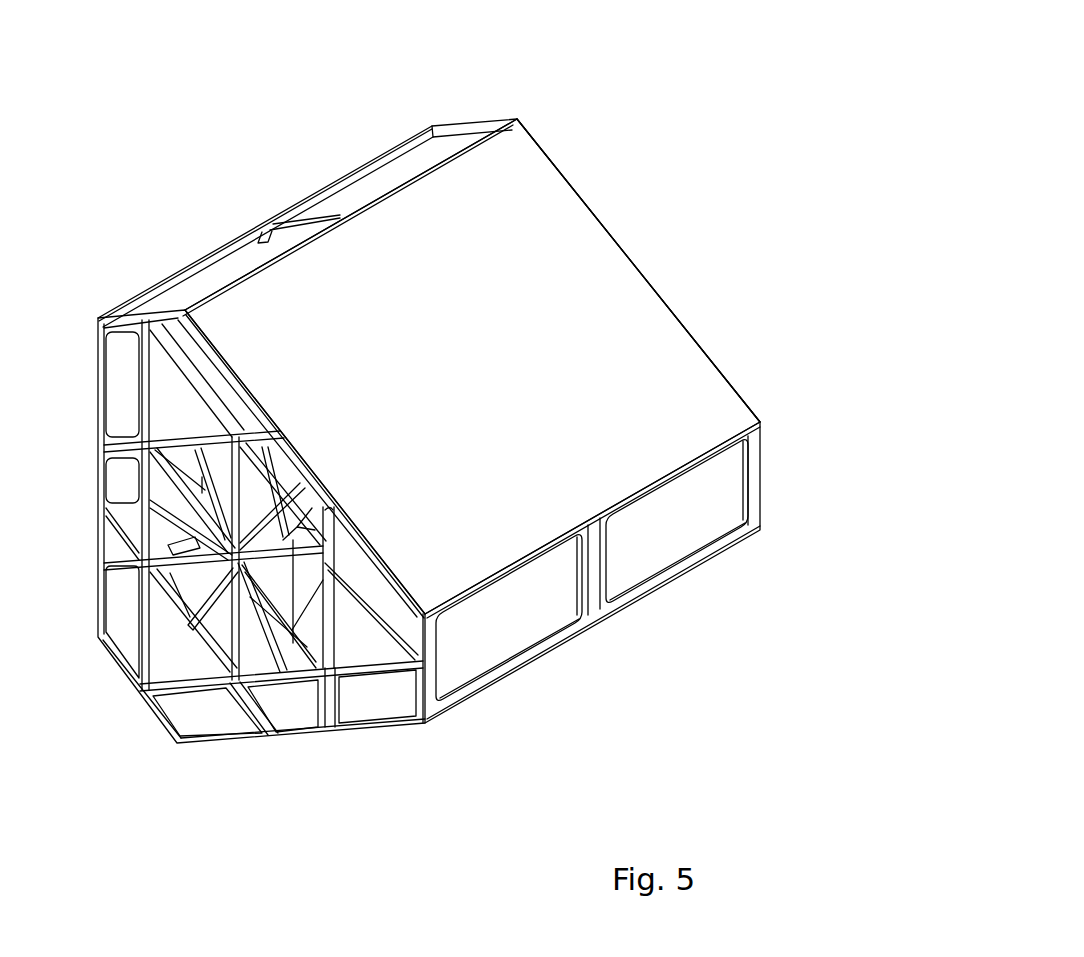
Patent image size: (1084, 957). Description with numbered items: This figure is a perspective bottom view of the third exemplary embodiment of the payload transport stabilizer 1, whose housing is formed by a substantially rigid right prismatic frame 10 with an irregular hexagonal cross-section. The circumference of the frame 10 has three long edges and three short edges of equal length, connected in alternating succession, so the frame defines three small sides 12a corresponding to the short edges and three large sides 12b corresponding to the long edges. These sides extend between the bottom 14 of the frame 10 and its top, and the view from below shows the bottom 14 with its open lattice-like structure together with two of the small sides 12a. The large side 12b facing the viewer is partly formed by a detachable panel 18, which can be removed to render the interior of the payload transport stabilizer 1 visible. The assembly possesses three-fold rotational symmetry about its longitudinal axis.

The payload transport stabilizer 1 is at (187, 190).
The frame 10 is at (332, 728).
The small sides 12a is at (378, 187).
The large sides 12b is at (625, 350).
The bottom 14 is at (142, 600).
The detachable panels 18 is at (510, 256).